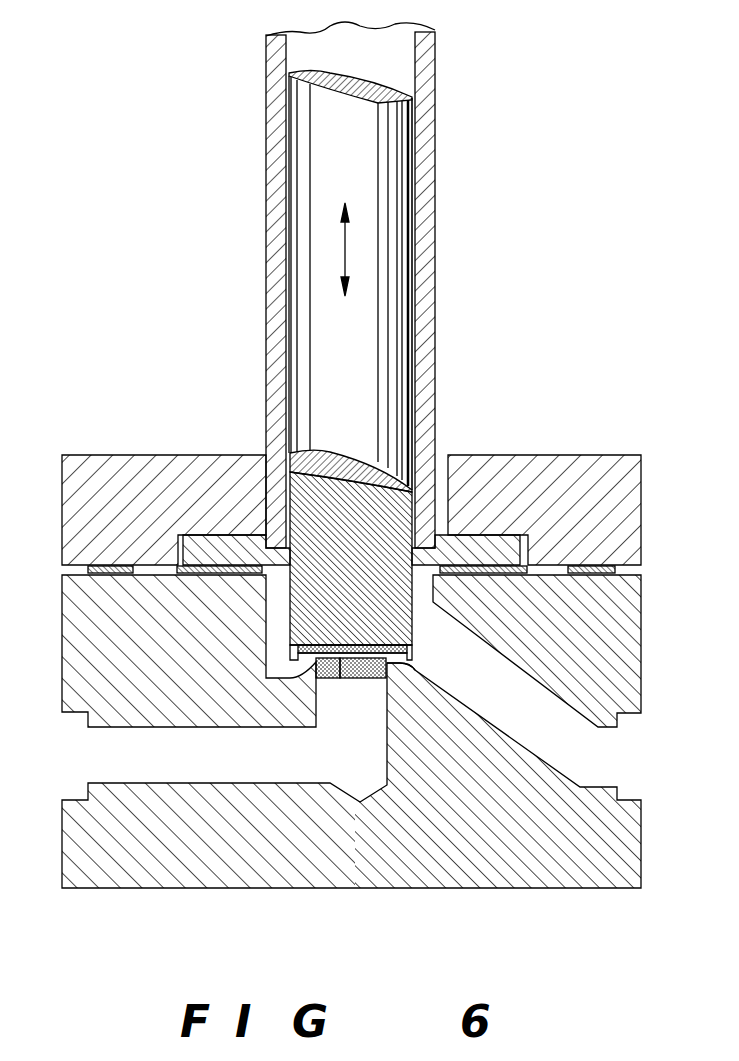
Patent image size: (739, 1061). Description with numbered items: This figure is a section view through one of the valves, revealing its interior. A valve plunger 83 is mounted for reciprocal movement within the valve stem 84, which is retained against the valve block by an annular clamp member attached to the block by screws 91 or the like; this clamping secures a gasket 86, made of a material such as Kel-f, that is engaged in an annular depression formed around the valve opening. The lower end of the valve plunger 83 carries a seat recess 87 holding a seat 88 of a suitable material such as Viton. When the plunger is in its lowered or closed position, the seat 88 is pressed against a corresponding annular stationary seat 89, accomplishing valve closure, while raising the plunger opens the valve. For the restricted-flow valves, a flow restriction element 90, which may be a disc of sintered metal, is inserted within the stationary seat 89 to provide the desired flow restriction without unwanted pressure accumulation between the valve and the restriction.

The valve plunger 83 is at (302, 342).
The valve stem 84 is at (267, 410).
The gasket 86 is at (440, 576).
The seat recess 87 is at (412, 650).
The seat 88 is at (338, 676).
The annular stationary seat 89 is at (400, 666).
The flow restriction element 90 is at (362, 677).
The screws 91 is at (95, 570).